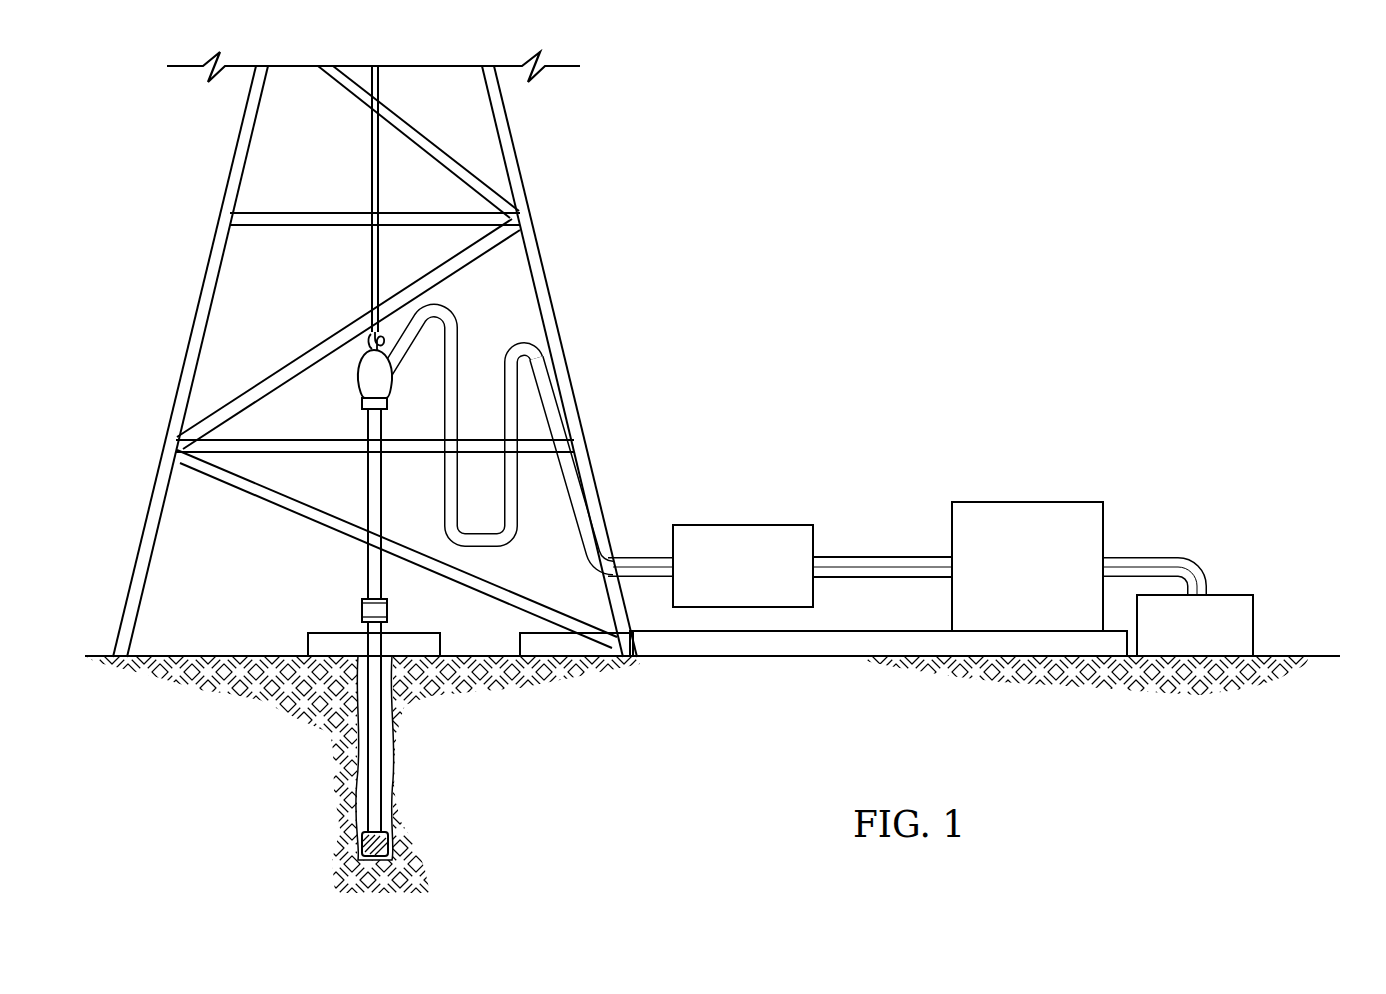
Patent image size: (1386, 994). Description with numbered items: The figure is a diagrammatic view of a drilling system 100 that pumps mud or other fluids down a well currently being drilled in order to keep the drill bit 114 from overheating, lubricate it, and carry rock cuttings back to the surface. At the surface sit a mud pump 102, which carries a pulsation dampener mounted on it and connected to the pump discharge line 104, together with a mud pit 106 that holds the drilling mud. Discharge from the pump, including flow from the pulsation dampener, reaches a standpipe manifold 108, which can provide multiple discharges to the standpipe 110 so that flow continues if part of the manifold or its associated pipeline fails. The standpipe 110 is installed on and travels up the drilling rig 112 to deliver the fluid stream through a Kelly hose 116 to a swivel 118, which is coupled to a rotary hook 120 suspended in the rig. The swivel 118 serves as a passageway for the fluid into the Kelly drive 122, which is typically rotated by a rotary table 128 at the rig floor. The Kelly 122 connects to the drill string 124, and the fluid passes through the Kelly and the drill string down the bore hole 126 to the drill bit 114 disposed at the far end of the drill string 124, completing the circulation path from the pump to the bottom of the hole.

The drilling system 100 is at (1056, 134).
The mud pump 102 is at (1030, 502).
The pump discharge line 104 is at (882, 557).
The mud pit 106 is at (1253, 623).
The standpipe manifold 108 is at (745, 525).
The standpipe 110 is at (583, 563).
The drilling rig 112 is at (183, 367).
The drill bit 114 is at (390, 844).
The Kelly hose 116 is at (458, 373).
The swivel 118 is at (357, 378).
The rotary hook 120 is at (363, 338).
The Kelly drive 122 is at (367, 423).
The drill string 124 is at (358, 738).
The bore hole 126 is at (392, 755).
The rotary table 128 is at (332, 633).